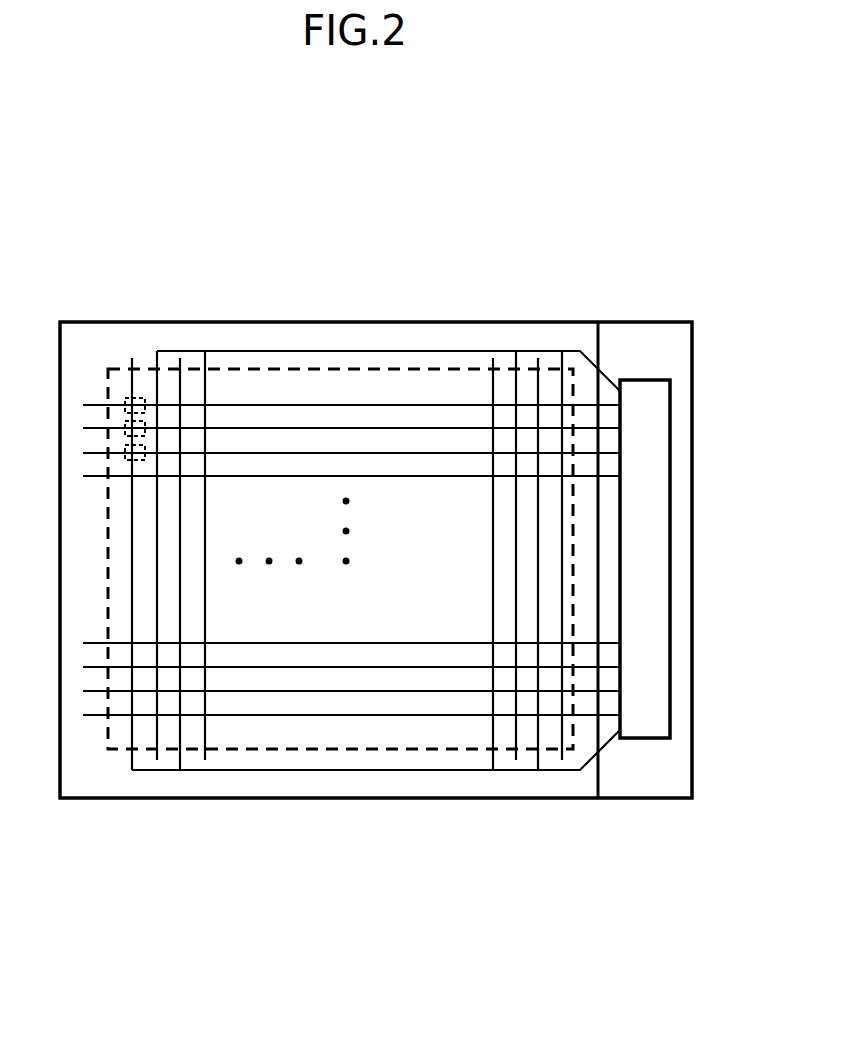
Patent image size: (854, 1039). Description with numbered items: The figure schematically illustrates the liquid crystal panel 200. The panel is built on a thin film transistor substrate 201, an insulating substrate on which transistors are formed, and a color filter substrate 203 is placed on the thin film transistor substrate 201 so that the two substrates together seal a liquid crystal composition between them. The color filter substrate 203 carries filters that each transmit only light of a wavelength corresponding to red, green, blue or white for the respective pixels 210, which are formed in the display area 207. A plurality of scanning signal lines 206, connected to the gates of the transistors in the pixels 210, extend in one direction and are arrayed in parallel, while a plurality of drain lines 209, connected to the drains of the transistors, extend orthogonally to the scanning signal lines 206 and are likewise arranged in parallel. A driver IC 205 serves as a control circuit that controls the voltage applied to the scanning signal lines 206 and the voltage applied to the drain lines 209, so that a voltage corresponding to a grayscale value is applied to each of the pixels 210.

The liquid crystal panel 200 is at (523, 153).
The thin film transistor substrate 201 is at (622, 321).
The color filter substrate 203 is at (490, 333).
The driver IC 205 is at (642, 712).
The scanning signal lines 206 is at (360, 400).
The display area 207 is at (370, 750).
The drain lines 209 is at (130, 736).
The pixels 210 is at (125, 400).